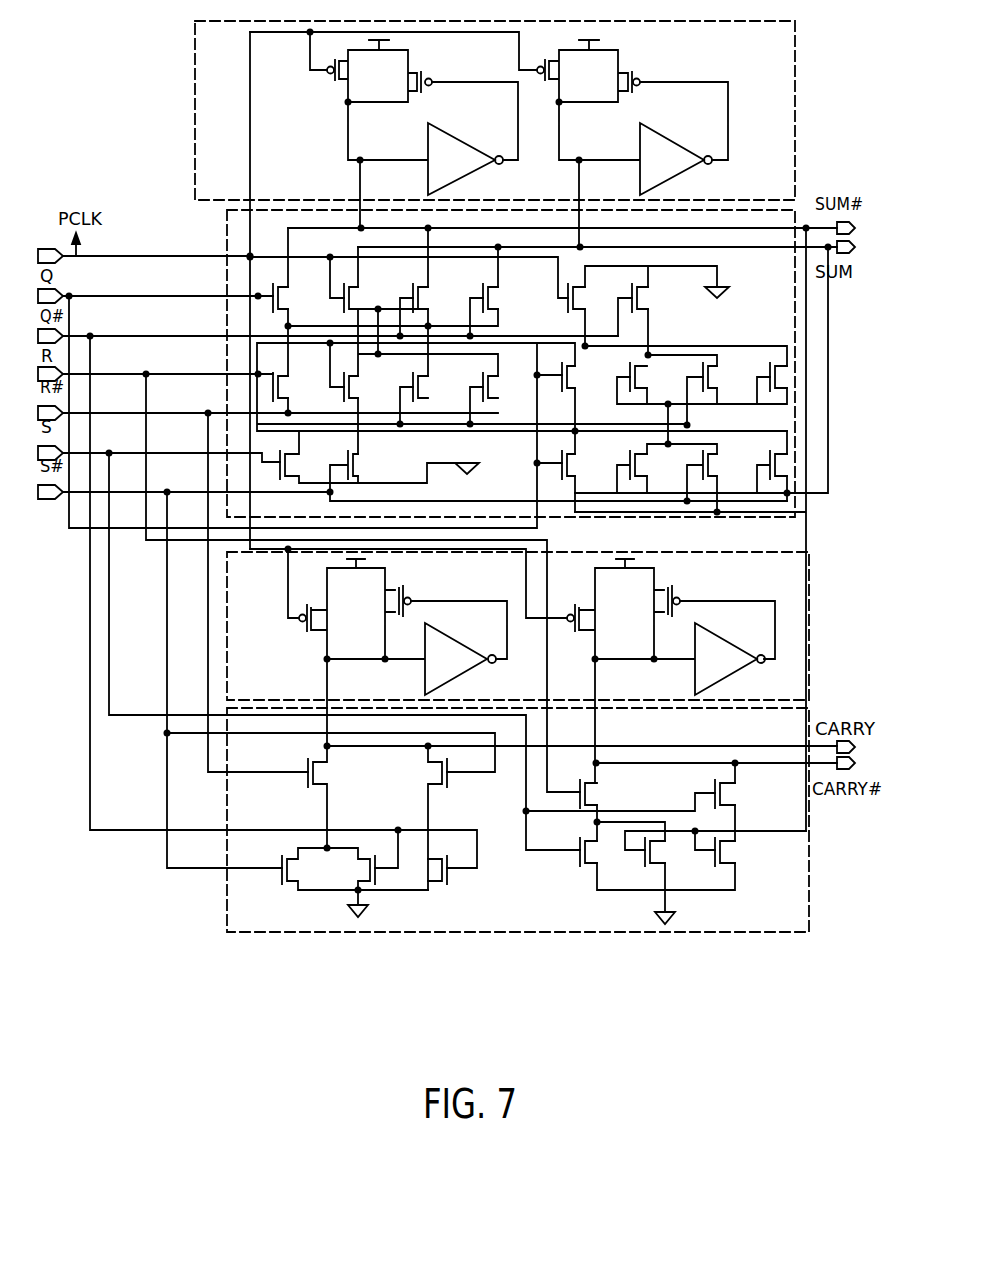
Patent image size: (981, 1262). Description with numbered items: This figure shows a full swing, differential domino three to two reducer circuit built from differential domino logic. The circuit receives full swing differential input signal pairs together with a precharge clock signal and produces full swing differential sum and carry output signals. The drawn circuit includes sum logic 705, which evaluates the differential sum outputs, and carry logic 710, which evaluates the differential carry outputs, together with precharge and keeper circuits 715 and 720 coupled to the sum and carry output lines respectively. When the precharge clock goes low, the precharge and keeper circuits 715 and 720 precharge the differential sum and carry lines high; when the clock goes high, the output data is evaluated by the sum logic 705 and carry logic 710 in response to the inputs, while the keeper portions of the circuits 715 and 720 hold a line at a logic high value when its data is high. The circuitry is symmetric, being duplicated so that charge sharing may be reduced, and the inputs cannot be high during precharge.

The sum logic 705 is at (228, 228).
The carry logic 710 is at (809, 857).
The precharge and keeper circuit 715 is at (795, 108).
The precharge and keeper circuit 720 is at (809, 578).